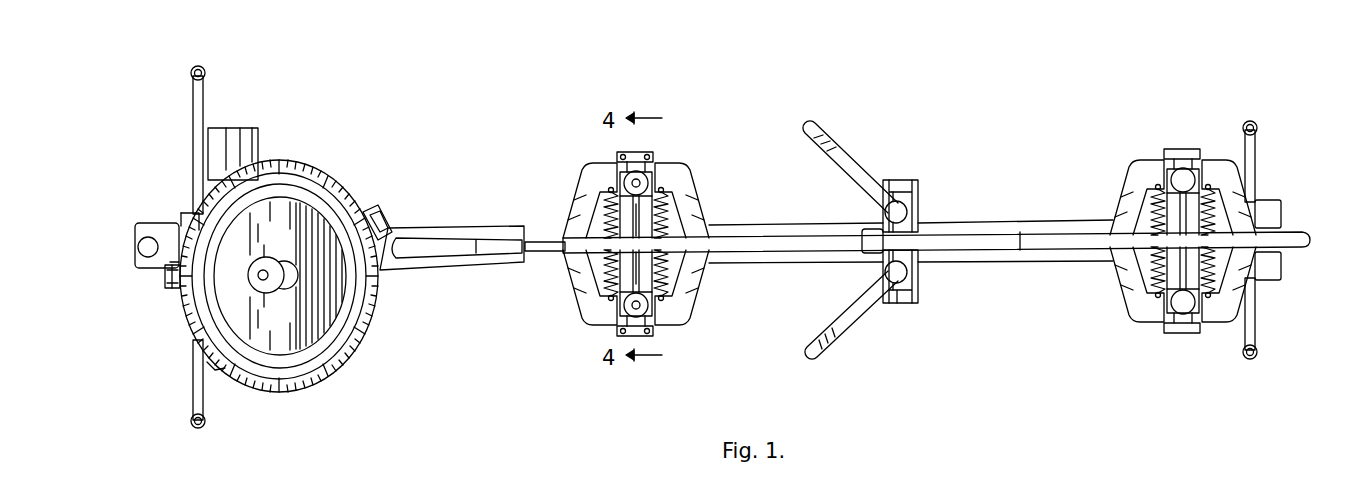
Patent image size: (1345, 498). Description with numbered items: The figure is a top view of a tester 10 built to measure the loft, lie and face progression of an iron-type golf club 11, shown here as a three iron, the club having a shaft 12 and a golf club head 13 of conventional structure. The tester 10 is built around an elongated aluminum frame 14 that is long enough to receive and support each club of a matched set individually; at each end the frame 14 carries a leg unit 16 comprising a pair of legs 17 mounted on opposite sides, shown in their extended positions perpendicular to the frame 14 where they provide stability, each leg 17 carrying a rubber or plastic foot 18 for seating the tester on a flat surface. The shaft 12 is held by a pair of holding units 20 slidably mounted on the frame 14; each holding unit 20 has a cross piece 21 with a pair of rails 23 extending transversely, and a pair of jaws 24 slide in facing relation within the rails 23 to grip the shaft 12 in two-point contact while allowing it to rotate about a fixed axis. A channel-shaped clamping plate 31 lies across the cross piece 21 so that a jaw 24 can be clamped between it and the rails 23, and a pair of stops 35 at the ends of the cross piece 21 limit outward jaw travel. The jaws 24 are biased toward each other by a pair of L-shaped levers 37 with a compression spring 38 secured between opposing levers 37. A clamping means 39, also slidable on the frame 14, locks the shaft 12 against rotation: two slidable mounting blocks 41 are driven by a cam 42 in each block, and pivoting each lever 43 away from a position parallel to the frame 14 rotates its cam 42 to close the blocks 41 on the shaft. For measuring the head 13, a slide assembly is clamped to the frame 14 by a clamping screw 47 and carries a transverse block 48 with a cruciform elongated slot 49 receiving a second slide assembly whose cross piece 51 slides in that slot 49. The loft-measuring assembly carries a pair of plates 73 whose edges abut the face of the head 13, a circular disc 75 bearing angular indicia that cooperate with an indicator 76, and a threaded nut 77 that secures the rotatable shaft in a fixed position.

The tester 10 is at (911, 214).
The golf club 11 is at (782, 232).
The shaft 12 is at (1020, 252).
The golf club head 13 is at (362, 210).
The elongated frame 14 is at (800, 265).
The leg unit 16 is at (190, 357).
The leg 17 is at (200, 96).
The foot 18 is at (206, 70).
The holding unit 20 is at (872, 235).
The cross piece 21 is at (648, 214).
The rails 23 is at (616, 160).
The jaw 24 is at (644, 200).
The clamping plate 31 is at (592, 184).
The stop 35 is at (642, 155).
The L-shaped lever 37 is at (586, 208).
The compression spring 38 is at (575, 278).
The clamping means 39 is at (848, 152).
The mounting block 41 is at (898, 230).
The cam 42 is at (883, 210).
The lever 43 is at (810, 128).
The clamping screw 47 is at (150, 232).
The block 48 is at (262, 132).
The elongated slot 49 is at (236, 130).
The cross piece 51 is at (216, 378).
The plate 73 is at (386, 232).
The circular disc 75 is at (322, 186).
The indicator 76 is at (178, 292).
The threaded nut 77 is at (258, 275).